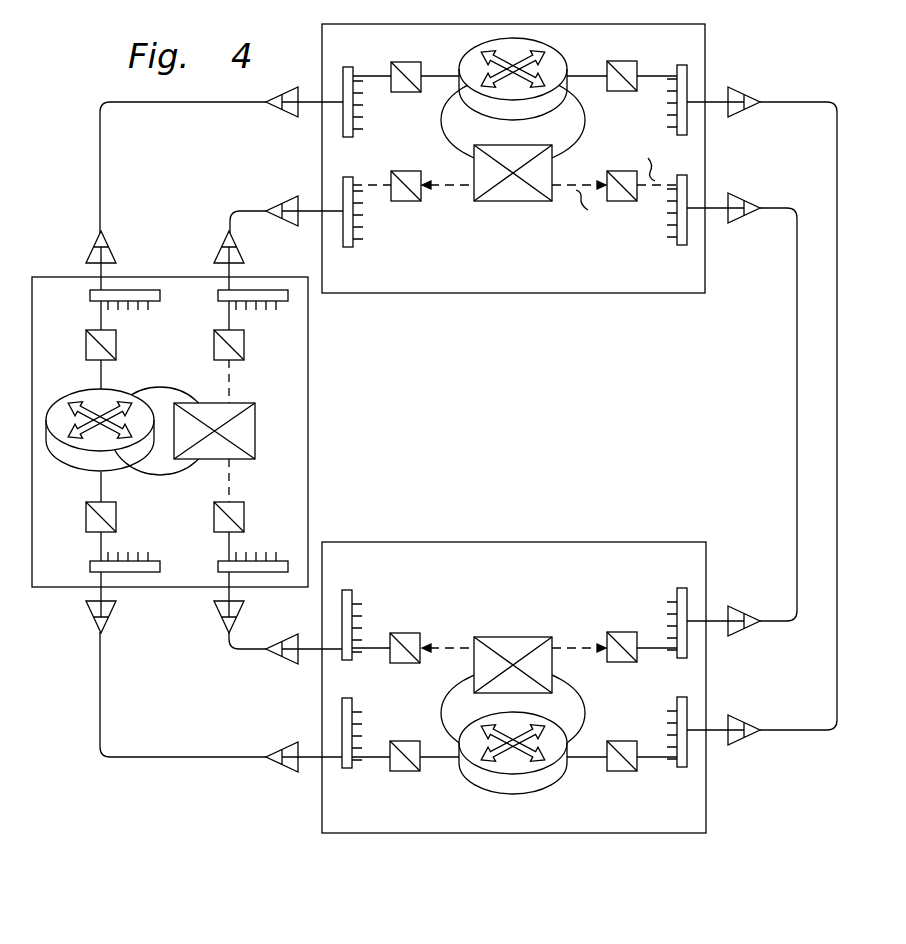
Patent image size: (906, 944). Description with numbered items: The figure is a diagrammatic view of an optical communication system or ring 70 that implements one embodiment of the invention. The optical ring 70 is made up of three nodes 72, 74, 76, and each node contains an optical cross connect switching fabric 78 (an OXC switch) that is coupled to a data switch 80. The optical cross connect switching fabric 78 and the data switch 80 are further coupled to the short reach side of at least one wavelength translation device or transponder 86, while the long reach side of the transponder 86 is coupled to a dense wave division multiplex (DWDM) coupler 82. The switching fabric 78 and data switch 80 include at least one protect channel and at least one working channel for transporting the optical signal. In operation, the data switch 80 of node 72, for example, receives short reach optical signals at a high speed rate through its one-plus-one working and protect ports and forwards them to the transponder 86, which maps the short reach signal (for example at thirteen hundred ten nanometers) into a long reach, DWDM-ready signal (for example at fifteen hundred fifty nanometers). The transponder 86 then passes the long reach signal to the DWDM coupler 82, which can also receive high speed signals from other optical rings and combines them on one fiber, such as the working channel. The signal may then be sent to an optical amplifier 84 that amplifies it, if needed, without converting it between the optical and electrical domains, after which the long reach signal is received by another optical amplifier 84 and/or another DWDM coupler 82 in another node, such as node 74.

The optical communication system or ring 70 is at (224, 790).
The node 72 is at (514, 687).
The node 74 is at (170, 432).
The node 76 is at (513, 158).
The optical cross connect switching fabric 78 is at (513, 637).
The data switch 80 is at (558, 779).
The dense wave division multiplex (DWDM) coupler 82 is at (348, 768).
The optical amplifier 84 is at (284, 771).
The wavelength translation device (or transponder) 86 is at (404, 633).